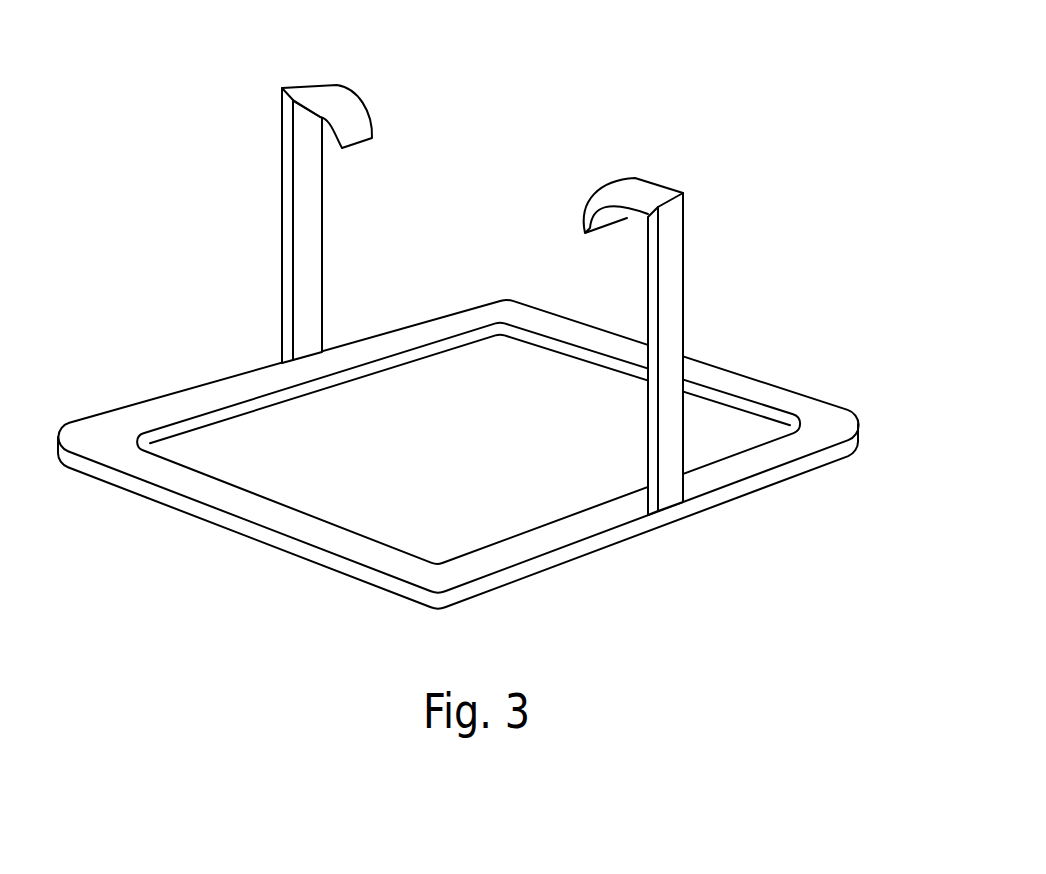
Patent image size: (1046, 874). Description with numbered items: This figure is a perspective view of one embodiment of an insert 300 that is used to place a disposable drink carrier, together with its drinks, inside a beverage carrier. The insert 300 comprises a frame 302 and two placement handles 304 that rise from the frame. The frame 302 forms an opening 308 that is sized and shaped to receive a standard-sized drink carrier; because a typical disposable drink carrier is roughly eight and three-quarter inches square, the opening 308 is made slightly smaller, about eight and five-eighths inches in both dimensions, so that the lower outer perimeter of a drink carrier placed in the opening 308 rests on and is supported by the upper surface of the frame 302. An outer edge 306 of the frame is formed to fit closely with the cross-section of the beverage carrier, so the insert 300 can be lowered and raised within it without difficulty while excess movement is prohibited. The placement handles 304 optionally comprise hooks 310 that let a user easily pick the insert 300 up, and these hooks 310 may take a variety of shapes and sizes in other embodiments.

The insert 300 is at (466, 319).
The frame 302 is at (466, 469).
The placement handles 304 is at (491, 300).
The outer edge 306 is at (833, 450).
The opening 308 is at (303, 435).
The hooks 310 is at (352, 122).